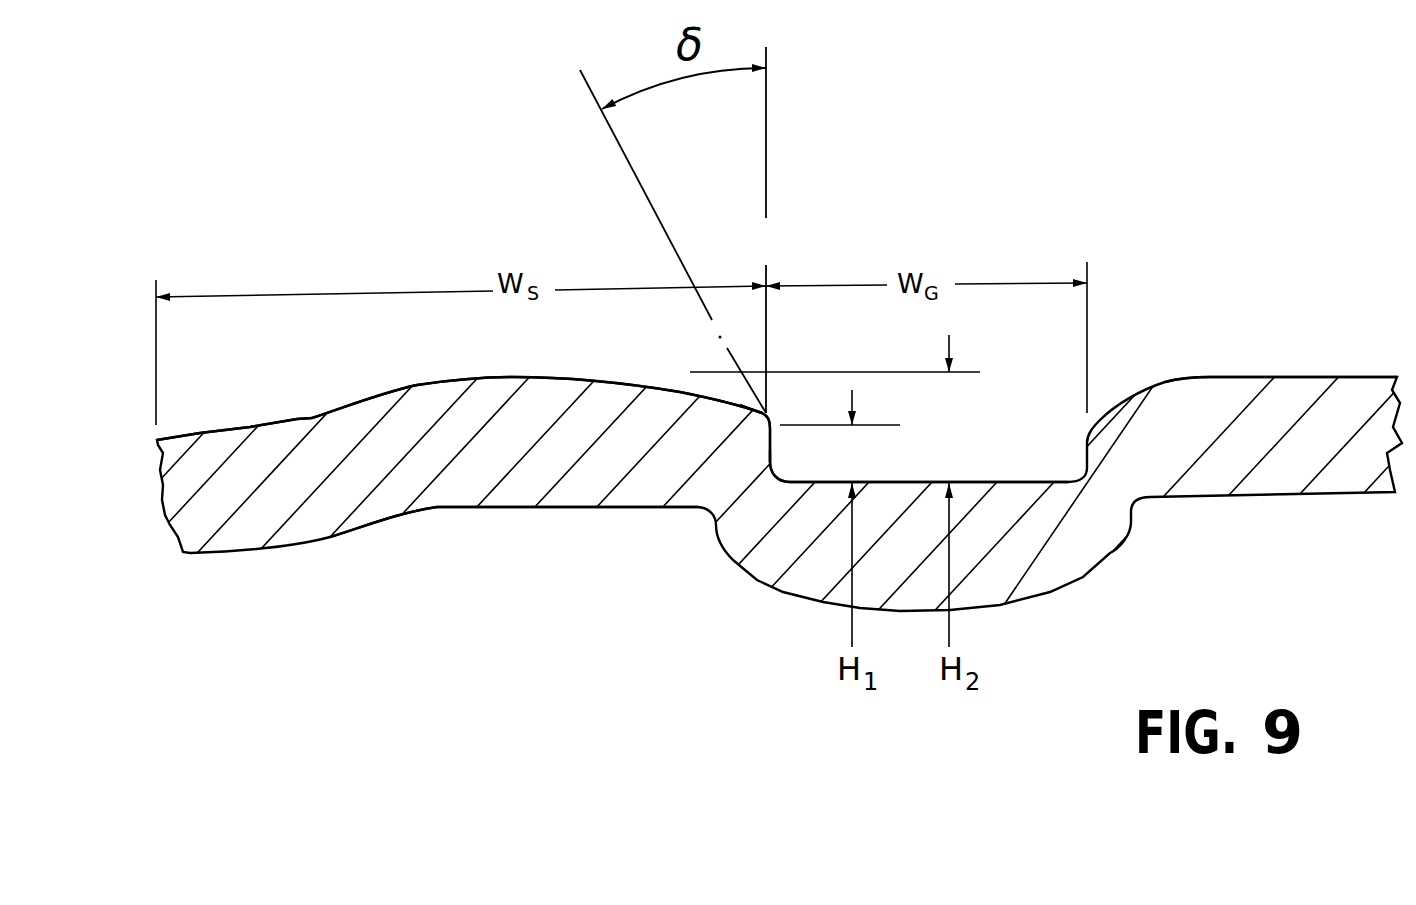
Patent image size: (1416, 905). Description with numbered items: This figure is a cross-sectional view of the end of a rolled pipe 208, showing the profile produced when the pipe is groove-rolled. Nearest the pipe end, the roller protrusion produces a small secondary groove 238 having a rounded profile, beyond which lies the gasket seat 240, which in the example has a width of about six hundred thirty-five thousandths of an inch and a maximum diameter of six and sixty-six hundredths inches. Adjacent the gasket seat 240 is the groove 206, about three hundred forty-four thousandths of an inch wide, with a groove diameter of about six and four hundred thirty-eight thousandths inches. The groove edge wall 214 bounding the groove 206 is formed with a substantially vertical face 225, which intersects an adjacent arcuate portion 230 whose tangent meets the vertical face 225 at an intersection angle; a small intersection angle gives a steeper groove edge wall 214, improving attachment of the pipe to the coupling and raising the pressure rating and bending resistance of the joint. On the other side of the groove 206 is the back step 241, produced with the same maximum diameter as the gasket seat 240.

The groove 206 is at (1063, 449).
The pipe 208 is at (480, 508).
The groove edge wall 214 is at (778, 456).
The vertical face 225 is at (773, 441).
The arcuate portion 230 is at (772, 404).
The secondary groove 238 is at (297, 417).
The gasket seat 240 is at (417, 385).
The back step 241 is at (1308, 377).